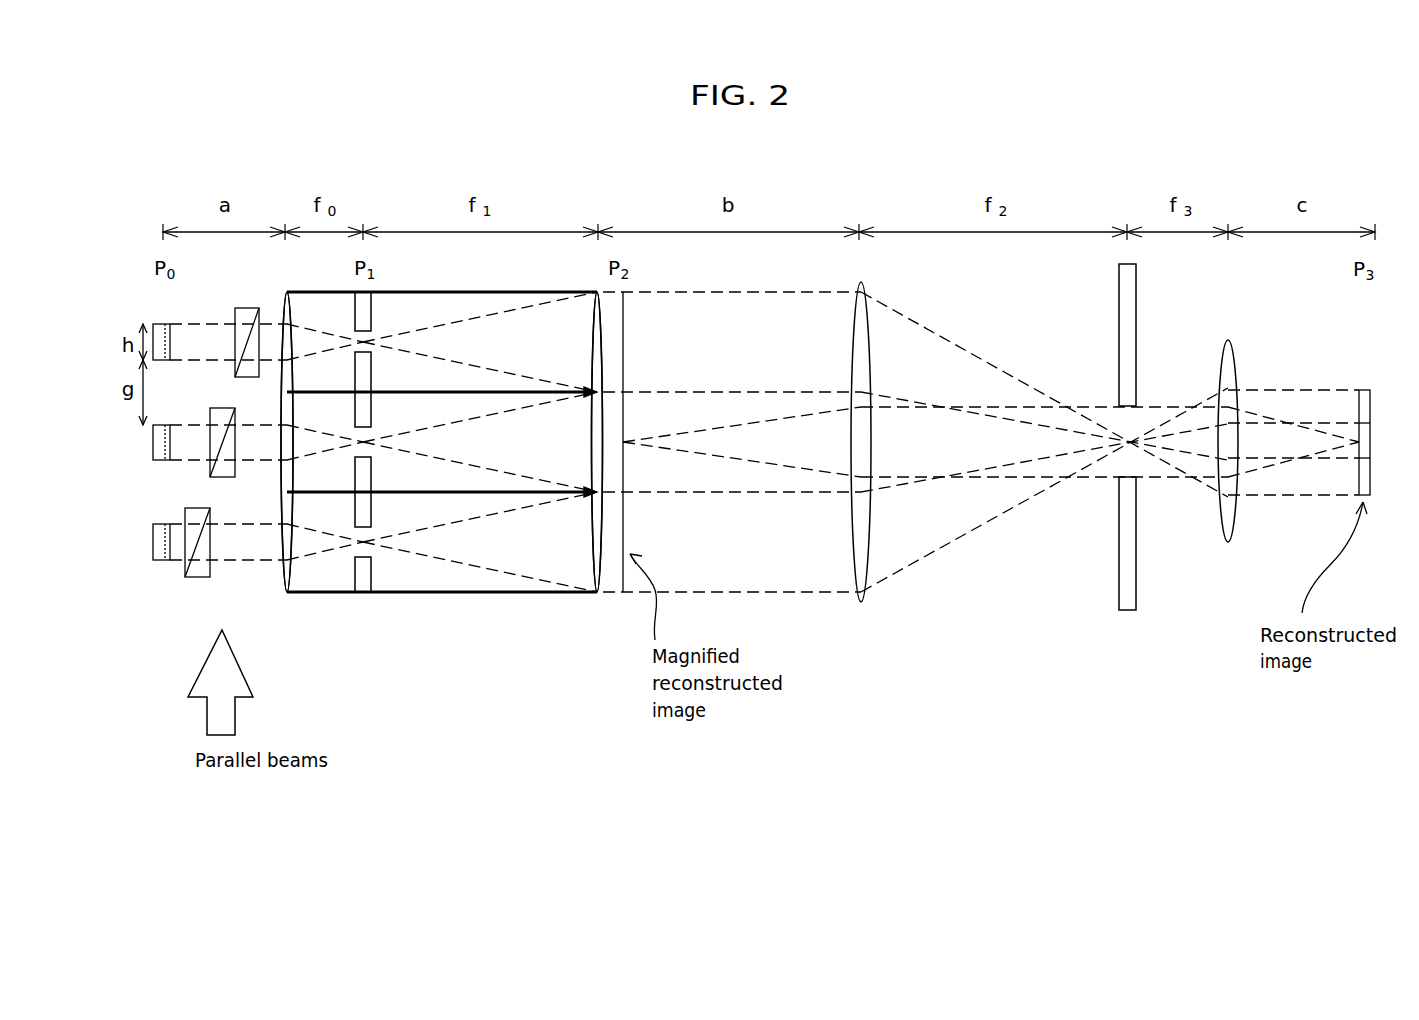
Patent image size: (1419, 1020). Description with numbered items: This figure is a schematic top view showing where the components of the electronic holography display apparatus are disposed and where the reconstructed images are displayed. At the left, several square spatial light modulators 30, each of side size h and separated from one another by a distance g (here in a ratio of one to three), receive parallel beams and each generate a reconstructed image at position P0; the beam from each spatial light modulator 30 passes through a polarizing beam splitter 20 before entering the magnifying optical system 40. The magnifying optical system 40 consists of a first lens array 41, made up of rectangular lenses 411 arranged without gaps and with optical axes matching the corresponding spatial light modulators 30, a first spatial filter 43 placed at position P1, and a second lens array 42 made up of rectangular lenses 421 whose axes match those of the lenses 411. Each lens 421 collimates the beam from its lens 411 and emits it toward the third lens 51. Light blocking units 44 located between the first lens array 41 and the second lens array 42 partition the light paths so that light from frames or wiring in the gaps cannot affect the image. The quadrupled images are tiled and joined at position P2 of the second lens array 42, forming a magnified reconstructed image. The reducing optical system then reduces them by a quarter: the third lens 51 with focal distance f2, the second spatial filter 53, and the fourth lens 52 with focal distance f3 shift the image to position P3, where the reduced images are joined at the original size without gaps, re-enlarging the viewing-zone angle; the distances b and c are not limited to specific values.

The polarizing beam splitter 20 is at (212, 478).
The spatial light modulator 30 is at (160, 560).
The magnifying optical system 40 is at (418, 508).
The first lens array 41 is at (298, 584).
The lens 411 is at (283, 298).
The second lens array 42 is at (575, 562).
The lens 421 is at (602, 518).
The first spatial filter 43 is at (376, 584).
The light blocking unit 44 is at (461, 602).
The third lens 51 is at (852, 560).
The fourth lens 52 is at (1226, 542).
The second spatial filter 53 is at (1112, 560).